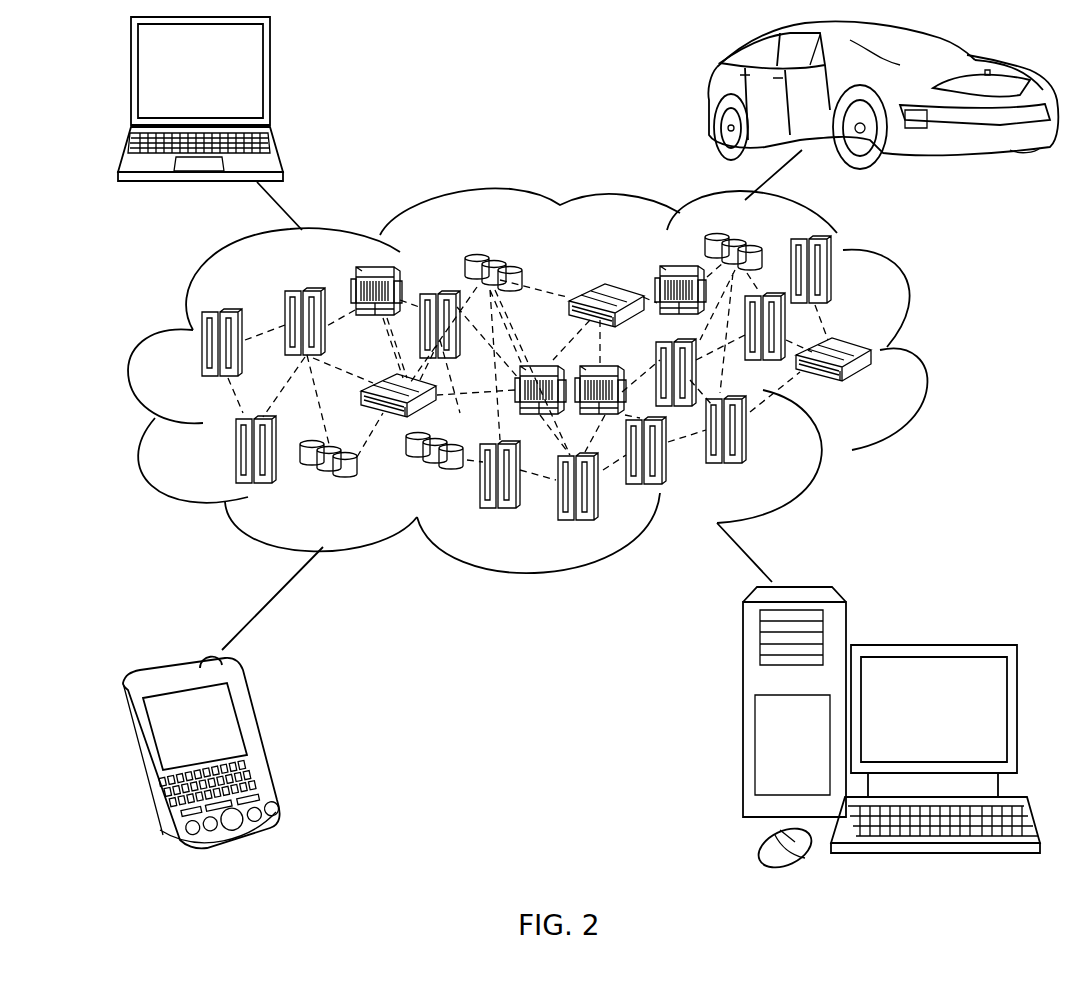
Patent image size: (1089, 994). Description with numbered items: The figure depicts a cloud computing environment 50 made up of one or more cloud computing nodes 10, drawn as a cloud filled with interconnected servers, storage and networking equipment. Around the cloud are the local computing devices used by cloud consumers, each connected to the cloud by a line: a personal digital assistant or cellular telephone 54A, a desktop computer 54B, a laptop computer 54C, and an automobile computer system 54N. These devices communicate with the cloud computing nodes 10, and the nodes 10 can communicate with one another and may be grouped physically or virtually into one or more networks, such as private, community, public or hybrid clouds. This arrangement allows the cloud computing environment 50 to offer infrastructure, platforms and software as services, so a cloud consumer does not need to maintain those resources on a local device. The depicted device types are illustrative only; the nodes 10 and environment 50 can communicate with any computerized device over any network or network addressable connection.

The cloud computing node 10 is at (882, 385).
The cloud computing environment 50 is at (932, 355).
The personal digital assistant or cellular telephone 54A is at (262, 738).
The desktop computer 54B is at (931, 645).
The laptop computer 54C is at (270, 79).
The automobile computer system 54N is at (712, 92).